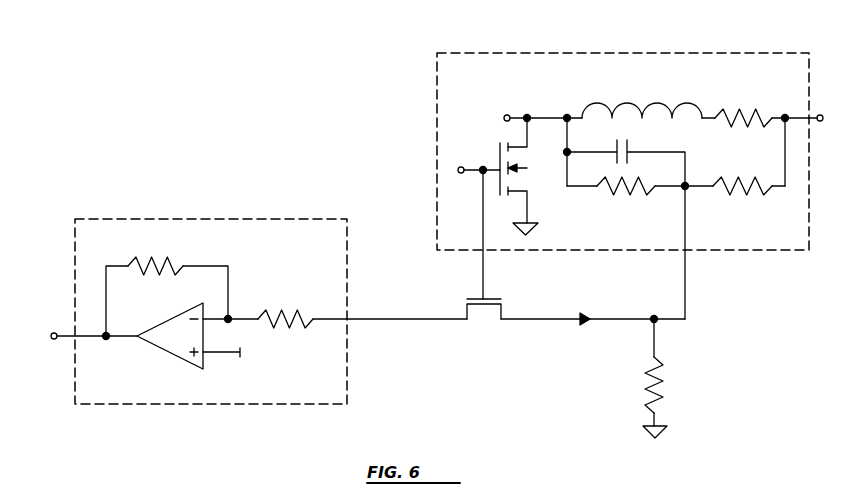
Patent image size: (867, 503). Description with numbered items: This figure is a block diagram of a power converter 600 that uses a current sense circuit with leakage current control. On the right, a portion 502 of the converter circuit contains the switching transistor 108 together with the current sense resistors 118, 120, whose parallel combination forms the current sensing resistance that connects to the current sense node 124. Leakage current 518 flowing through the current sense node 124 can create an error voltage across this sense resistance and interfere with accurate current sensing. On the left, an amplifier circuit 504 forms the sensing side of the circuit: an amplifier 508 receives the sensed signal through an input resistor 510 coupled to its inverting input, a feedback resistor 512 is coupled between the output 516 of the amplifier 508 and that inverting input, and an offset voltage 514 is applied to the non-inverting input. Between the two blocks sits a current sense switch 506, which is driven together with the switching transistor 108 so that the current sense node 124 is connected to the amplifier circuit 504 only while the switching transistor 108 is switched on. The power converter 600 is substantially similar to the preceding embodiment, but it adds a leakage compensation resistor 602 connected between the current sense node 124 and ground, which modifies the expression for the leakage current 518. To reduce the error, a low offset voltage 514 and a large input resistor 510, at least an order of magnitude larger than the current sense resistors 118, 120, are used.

The power converter 600 is at (242, 87).
The portion of the converter circuit 502 is at (668, 52).
The amplifier circuit 504 is at (168, 218).
The switching transistor 108 is at (497, 150).
The current sense resistor 118 is at (633, 195).
The current sense resistor 120 is at (738, 195).
The current sense node 124 is at (687, 262).
The current sense switch 506 is at (465, 312).
The amplifier 508 is at (175, 357).
The input resistor 510 is at (272, 310).
The feedback resistor 512 is at (158, 258).
The offset voltage 514 is at (240, 358).
The output 516 is at (64, 334).
The leakage current 518 is at (583, 322).
The leakage compensation resistor 602 is at (661, 373).